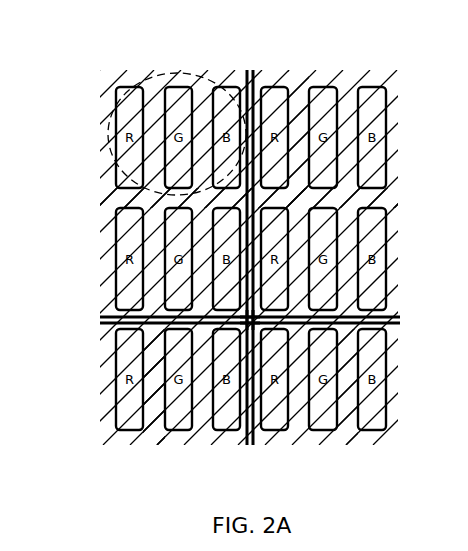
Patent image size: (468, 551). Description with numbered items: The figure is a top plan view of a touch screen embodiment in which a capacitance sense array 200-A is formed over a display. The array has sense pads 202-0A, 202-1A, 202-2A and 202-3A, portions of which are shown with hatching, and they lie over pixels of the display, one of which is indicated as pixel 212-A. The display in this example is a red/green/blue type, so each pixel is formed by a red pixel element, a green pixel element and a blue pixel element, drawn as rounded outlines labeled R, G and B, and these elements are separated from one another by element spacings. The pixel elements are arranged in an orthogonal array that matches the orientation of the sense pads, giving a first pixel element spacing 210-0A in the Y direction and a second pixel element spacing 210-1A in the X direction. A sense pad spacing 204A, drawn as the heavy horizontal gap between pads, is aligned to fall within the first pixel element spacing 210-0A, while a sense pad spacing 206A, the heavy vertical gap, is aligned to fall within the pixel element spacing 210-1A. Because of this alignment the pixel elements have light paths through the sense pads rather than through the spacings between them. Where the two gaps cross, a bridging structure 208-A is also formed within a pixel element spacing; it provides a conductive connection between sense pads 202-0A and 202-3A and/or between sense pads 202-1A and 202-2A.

The capacitance sense array 200-A is at (153, 42).
The pixel 212-A is at (108, 140).
The sense pad 202-0A is at (150, 196).
The bridging structure 208-A is at (248, 320).
The sense pad 202-1A is at (143, 382).
The second pixel element spacing 210-1A is at (170, 470).
The sense pad spacing 206A is at (247, 453).
The sense pad 202-3A is at (340, 372).
The sense pad 202-2A is at (300, 190).
The first pixel element spacing 210-0A is at (424, 214).
The sense pad spacing 204A is at (407, 314).